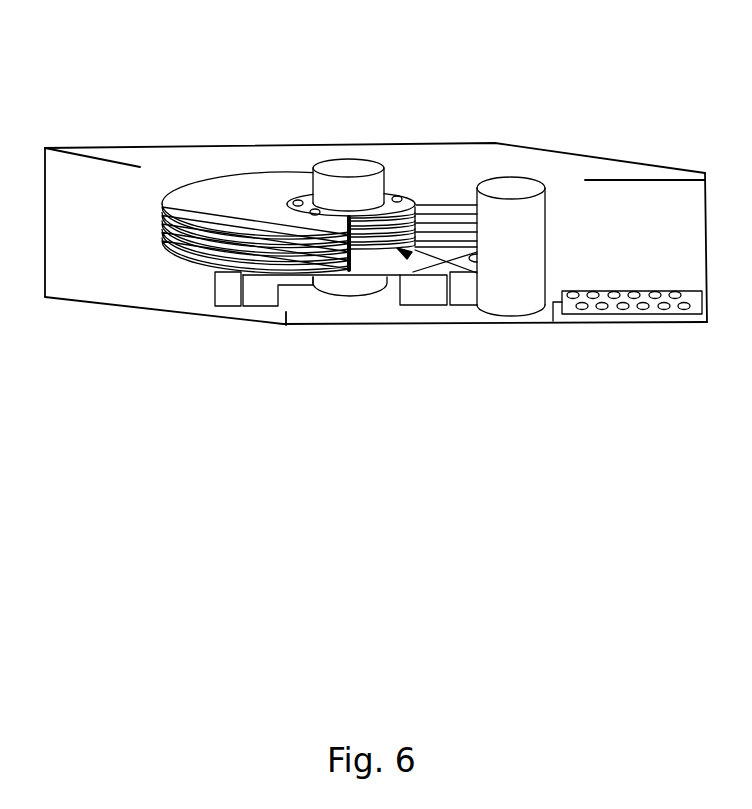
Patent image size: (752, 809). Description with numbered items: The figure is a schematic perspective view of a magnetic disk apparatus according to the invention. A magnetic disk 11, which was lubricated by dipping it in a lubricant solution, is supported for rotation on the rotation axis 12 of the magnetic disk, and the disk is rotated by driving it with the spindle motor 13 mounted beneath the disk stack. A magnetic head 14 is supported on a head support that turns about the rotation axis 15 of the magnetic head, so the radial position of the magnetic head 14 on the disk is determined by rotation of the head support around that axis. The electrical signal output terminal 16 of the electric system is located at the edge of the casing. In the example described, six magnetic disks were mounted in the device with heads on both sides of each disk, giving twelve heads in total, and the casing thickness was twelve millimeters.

The magnetic disk 11 is at (248, 205).
The rotation axis of the magnetic disk 12 is at (352, 178).
The spindle motor 13 is at (261, 296).
The magnetic head 14 is at (399, 250).
The rotation axis of the magnetic head 15 is at (507, 226).
The electrical signal output terminal 16 is at (618, 307).